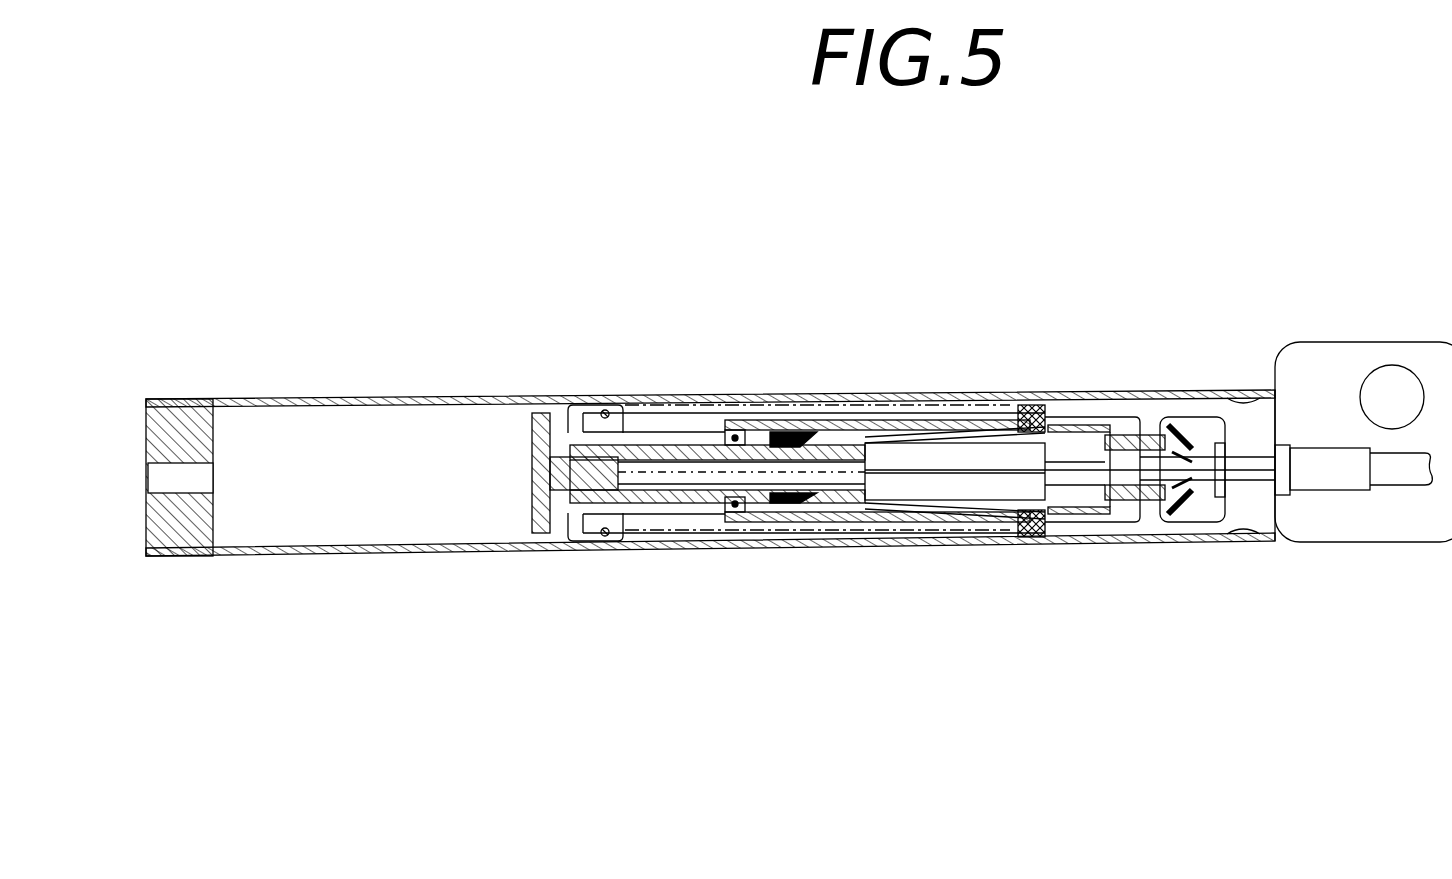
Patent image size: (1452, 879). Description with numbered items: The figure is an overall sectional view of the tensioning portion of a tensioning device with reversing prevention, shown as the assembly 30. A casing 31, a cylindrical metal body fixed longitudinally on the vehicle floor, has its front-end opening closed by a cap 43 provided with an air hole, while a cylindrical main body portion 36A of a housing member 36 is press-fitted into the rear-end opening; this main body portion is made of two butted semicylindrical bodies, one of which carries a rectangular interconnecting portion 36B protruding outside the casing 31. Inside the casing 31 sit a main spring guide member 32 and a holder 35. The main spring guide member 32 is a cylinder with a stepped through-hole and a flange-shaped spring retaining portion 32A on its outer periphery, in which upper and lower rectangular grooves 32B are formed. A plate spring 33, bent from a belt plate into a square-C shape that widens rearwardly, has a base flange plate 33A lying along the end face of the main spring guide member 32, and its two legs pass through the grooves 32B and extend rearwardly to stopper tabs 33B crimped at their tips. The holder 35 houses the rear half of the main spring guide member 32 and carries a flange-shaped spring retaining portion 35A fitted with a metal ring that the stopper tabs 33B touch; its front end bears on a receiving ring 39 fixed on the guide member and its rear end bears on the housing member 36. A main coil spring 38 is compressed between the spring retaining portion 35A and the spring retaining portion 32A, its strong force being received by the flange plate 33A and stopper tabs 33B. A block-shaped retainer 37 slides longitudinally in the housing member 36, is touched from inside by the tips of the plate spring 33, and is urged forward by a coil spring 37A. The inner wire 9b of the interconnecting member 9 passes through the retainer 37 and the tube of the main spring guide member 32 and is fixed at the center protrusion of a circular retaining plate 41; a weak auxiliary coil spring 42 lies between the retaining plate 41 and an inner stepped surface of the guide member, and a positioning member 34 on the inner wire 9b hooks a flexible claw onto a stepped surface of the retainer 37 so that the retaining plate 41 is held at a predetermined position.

The damper assembly 30 is at (690, 228).
The casing 31 is at (790, 398).
The main spring guide member 32 is at (735, 447).
The spring retaining portion 32A is at (582, 408).
The rectangular grooves 32B is at (638, 512).
The plate spring 33 is at (875, 441).
The flange plate 33A is at (560, 420).
The stopper tabs 33B is at (1090, 440).
The positioning member 34 is at (1065, 512).
The holder 35 is at (955, 418).
The spring retaining portion 35A is at (1040, 405).
The housing member 36 is at (1310, 545).
The main body portion 36A is at (1205, 405).
The interconnecting portion 36B is at (1347, 357).
The retainer 37 is at (1148, 512).
The coil spring 37A is at (1190, 525).
The main coil spring 38 is at (848, 390).
The receiving ring 39 is at (740, 515).
The retaining plate 41 is at (528, 470).
The auxiliary coil spring 42 is at (635, 447).
The cap 43 is at (185, 430).
The interconnecting member 9 is at (1335, 490).
The inner wire 9b is at (943, 503).